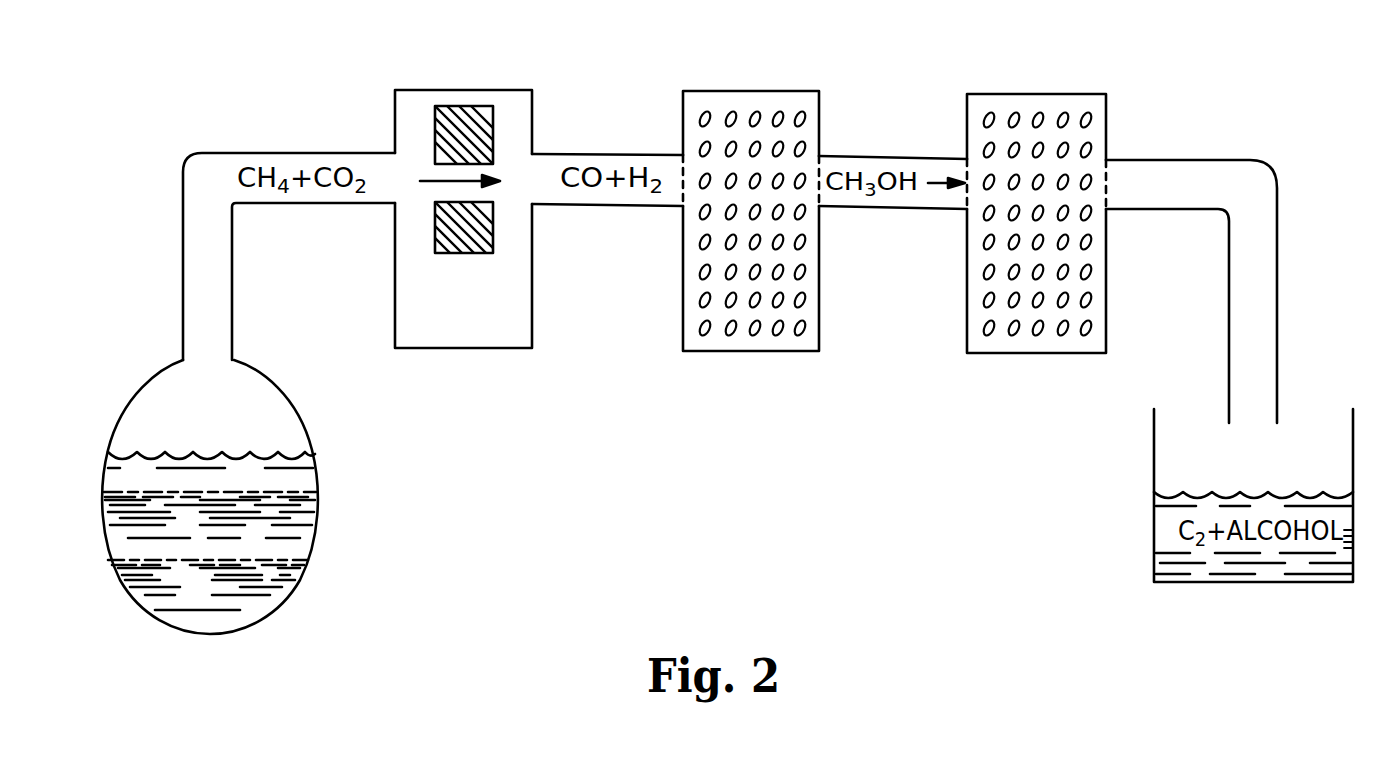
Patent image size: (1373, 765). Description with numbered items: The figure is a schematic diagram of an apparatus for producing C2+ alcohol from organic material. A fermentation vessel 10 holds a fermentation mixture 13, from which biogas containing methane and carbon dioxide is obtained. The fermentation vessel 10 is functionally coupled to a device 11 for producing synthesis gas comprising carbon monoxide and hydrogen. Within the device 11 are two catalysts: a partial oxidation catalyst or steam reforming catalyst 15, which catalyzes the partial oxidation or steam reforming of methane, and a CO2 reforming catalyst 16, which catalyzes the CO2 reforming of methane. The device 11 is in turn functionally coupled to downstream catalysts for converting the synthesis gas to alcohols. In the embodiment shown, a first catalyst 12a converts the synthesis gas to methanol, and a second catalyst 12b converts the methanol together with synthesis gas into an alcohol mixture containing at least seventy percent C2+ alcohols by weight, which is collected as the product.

The fermentation vessel 10 is at (120, 416).
The device for producing synthesis gas 11 is at (482, 90).
The first catalyst 12a is at (732, 112).
The second catalyst 12b is at (1010, 112).
The fermentation mixture 13 is at (117, 548).
The partial oxidation catalyst or steam reforming catalyst 15 is at (493, 124).
The CO2 reforming catalyst 16 is at (493, 250).